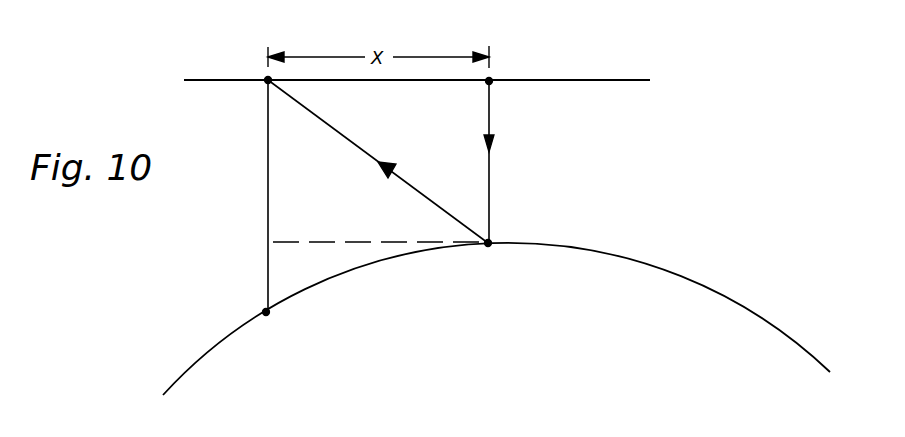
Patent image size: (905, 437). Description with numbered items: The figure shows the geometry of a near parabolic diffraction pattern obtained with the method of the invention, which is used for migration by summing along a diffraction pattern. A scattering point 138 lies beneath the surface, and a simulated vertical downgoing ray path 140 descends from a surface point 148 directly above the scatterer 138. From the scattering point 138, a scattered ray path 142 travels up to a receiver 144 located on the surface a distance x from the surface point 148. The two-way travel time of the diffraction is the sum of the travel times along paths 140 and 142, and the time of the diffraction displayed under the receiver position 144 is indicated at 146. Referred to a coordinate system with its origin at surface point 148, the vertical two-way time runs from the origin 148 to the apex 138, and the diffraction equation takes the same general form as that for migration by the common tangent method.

The scattering point 138 is at (488, 244).
The simulated vertical downgoing ray path 140 is at (490, 118).
The scattered ray path 142 is at (338, 133).
The receiver 144 is at (268, 80).
The time of the diffraction displayed under the receiver position 146 is at (266, 312).
The surface point 148 is at (490, 80).